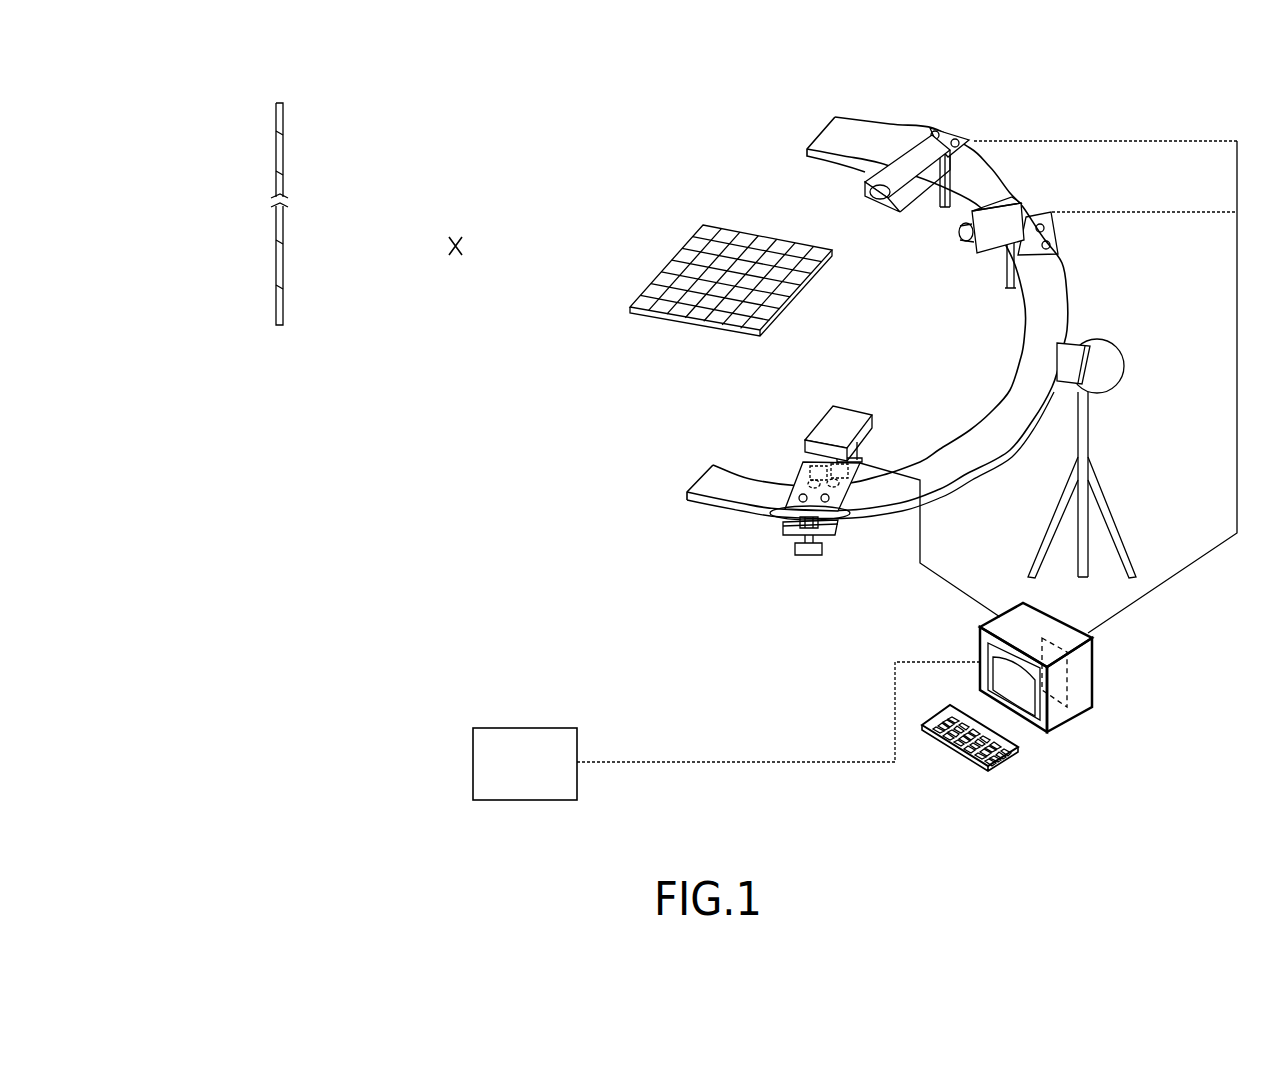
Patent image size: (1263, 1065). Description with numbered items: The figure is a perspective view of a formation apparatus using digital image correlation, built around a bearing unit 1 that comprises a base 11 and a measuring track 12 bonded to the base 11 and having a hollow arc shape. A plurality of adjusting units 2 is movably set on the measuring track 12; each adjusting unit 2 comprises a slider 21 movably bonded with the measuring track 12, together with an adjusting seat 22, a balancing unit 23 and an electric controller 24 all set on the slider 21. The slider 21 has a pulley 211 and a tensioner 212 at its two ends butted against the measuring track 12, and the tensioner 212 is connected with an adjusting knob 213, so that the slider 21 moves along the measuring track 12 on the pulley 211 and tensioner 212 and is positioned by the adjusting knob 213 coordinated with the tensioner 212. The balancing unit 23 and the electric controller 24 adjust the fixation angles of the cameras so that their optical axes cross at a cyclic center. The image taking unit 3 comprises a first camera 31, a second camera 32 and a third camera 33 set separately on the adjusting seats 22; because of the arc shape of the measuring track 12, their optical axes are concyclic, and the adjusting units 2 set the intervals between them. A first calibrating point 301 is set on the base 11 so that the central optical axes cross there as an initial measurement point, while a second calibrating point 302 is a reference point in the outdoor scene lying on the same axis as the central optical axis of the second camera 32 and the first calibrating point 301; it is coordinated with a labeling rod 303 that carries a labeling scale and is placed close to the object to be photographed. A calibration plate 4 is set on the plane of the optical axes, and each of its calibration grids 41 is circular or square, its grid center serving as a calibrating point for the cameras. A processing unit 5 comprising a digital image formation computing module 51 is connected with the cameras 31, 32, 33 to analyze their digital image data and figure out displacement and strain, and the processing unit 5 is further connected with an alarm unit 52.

The bearing unit 1 is at (952, 347).
The base 11 is at (1097, 358).
The measuring track 12 is at (1052, 303).
The adjusting unit 2 is at (909, 355).
The slider 21 is at (952, 133).
The pulley 211 is at (803, 463).
The tensioner 212 is at (805, 524).
The adjusting knob 213 is at (808, 555).
The adjusting seat 22 is at (940, 180).
The balancing unit 23 is at (934, 130).
The electric controller 24 is at (958, 146).
The image taking unit 3 is at (914, 298).
The first camera 31 is at (903, 200).
The second camera 32 is at (983, 258).
The third camera 33 is at (841, 386).
The calibration plate 4 is at (731, 263).
The calibration grid 41 is at (713, 303).
The processing unit 5 is at (806, 470).
The digital image formation computing module 51 is at (1068, 677).
The alarm unit 52 is at (473, 760).
The first calibrating point 301 is at (1103, 378).
The second calibrating point 302 is at (457, 256).
The labeling rod 303 is at (278, 165).